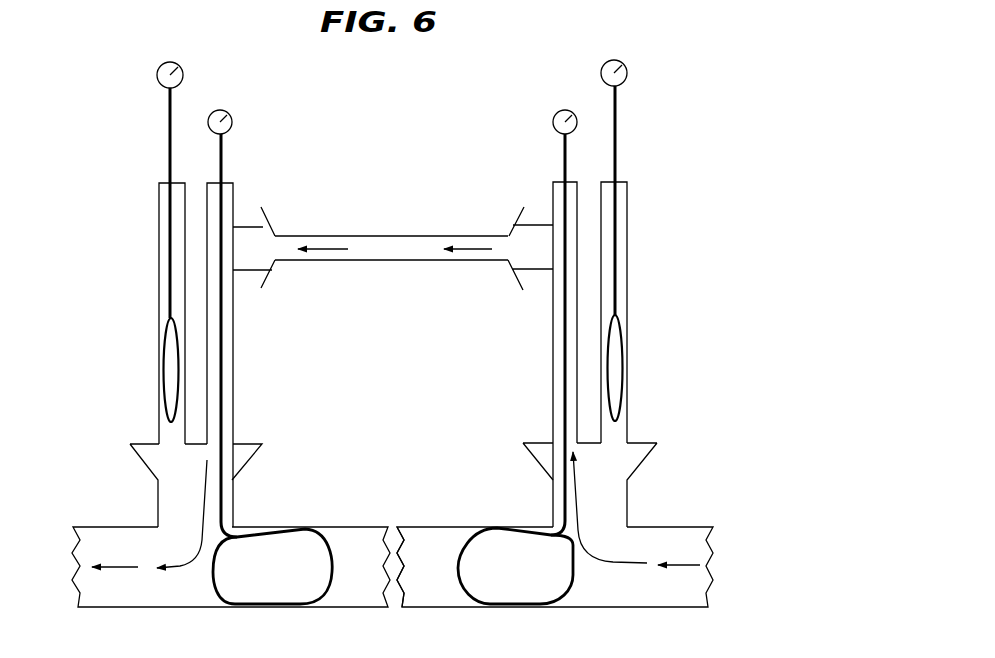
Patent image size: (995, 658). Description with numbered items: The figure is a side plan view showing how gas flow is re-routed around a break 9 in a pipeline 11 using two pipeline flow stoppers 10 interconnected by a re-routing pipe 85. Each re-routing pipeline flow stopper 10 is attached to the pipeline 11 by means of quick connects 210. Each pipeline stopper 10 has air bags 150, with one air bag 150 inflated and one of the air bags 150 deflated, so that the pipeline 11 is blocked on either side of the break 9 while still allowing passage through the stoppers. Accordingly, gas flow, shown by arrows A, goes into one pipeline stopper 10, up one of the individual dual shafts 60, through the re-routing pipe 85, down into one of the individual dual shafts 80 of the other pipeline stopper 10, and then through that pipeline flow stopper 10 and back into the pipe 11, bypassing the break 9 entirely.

The break 9 is at (390, 526).
The pipeline flow stopper 10 is at (140, 242).
The pipeline 11 is at (133, 608).
The individual dual shaft 60 is at (553, 383).
The individual dual shaft 80 is at (230, 385).
The re-routing pipe 85 is at (432, 232).
The air bag 150 is at (168, 373).
The quick connect 210 is at (252, 212).